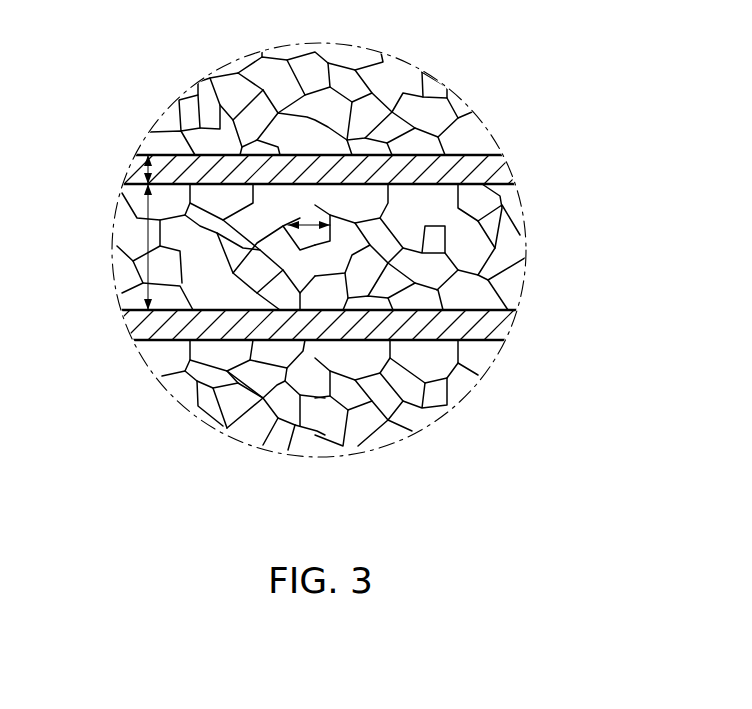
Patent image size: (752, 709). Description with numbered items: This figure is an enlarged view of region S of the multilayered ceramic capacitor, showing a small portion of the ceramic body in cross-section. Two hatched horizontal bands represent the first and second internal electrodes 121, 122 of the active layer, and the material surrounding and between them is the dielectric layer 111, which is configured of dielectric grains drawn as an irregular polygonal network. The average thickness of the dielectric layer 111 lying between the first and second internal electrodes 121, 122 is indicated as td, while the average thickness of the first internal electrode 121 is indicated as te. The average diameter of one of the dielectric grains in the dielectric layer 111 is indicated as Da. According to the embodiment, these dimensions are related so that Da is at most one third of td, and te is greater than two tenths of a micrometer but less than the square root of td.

The dielectric layer 111 is at (503, 268).
The first internal electrode 121 is at (495, 172).
The second internal electrode 122 is at (485, 325).
The average thickness of the internal electrodes te is at (148, 170).
The average thickness of the dielectric layer td is at (148, 248).
The average grain diameter of the dielectric grains Da is at (307, 228).
The region S is at (334, 543).